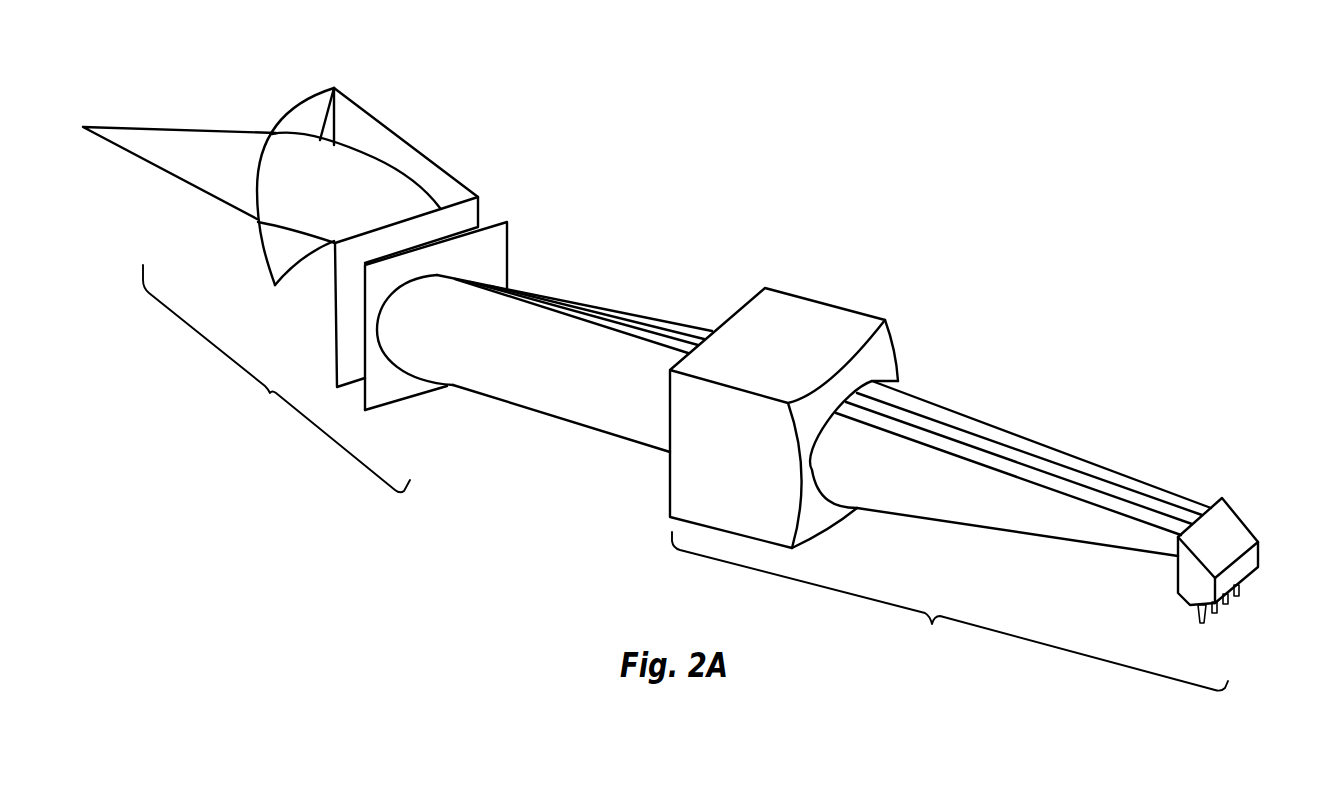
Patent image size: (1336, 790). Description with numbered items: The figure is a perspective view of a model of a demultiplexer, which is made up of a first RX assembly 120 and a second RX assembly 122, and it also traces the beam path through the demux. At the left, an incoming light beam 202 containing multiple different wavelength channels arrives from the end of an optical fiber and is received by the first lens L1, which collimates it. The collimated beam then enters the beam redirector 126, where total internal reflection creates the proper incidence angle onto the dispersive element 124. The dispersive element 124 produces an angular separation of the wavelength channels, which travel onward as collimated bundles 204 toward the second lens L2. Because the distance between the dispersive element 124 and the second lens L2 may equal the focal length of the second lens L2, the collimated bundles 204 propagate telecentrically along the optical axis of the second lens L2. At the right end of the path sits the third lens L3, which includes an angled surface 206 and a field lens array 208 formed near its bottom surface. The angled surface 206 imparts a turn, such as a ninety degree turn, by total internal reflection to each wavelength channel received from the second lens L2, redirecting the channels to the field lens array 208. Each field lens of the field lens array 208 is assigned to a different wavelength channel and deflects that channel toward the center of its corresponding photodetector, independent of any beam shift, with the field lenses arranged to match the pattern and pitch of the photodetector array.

The incoming light beam 202 is at (176, 133).
The first lens L1 is at (300, 105).
The beam redirector 126 is at (392, 131).
The dispersive element 124 is at (508, 258).
The collimated bundles 204 is at (622, 296).
The second lens L2 is at (820, 302).
The angled surface 206 is at (1245, 524).
The third lens L3 is at (1253, 559).
The field lens array 208 is at (1245, 587).
The first RX assembly 120 is at (276, 378).
The second RX assembly 122 is at (950, 611).